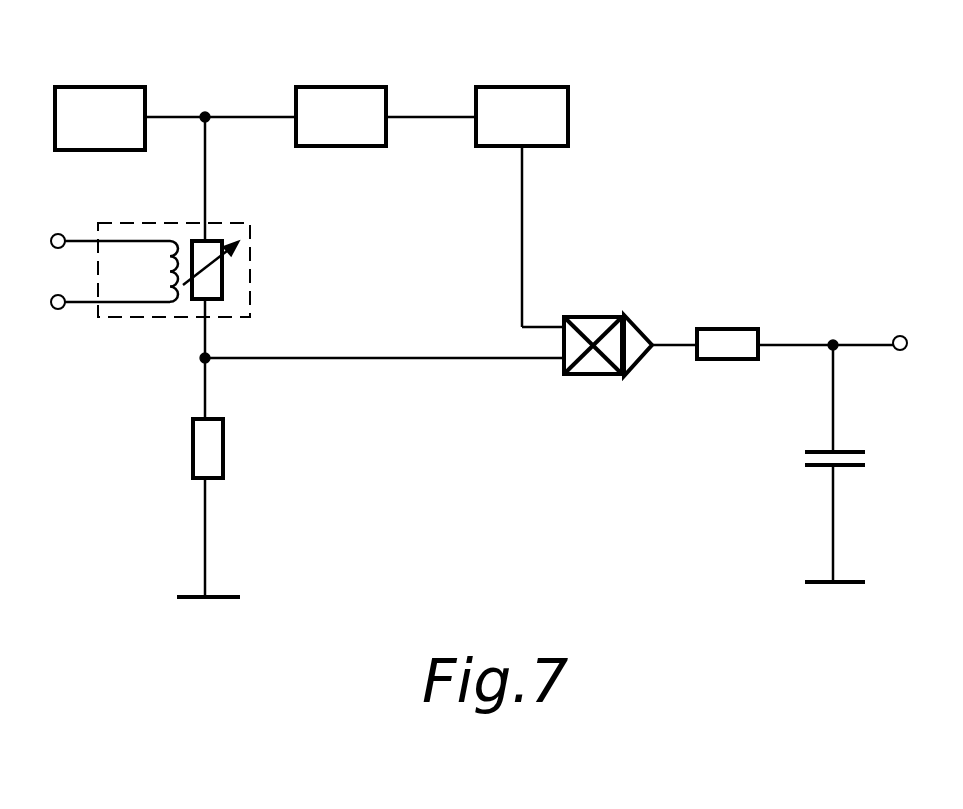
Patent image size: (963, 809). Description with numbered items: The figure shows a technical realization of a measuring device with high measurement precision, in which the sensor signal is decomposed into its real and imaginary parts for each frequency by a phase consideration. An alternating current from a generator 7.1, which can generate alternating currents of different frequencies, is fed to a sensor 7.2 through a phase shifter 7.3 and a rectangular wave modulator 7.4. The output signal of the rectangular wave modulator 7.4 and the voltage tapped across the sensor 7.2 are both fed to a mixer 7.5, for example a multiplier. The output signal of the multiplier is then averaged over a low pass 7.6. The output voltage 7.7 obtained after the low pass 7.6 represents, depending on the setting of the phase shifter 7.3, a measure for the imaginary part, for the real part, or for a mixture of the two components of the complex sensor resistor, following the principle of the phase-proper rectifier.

The generator 7.1 is at (102, 85).
The sensor 7.2 is at (225, 470).
The phase shifter 7.3 is at (350, 85).
The rectangular wave modulator 7.4 is at (538, 85).
The mixer 7.5 is at (585, 378).
The low pass 7.6 is at (805, 450).
The output voltage 7.7 is at (888, 337).